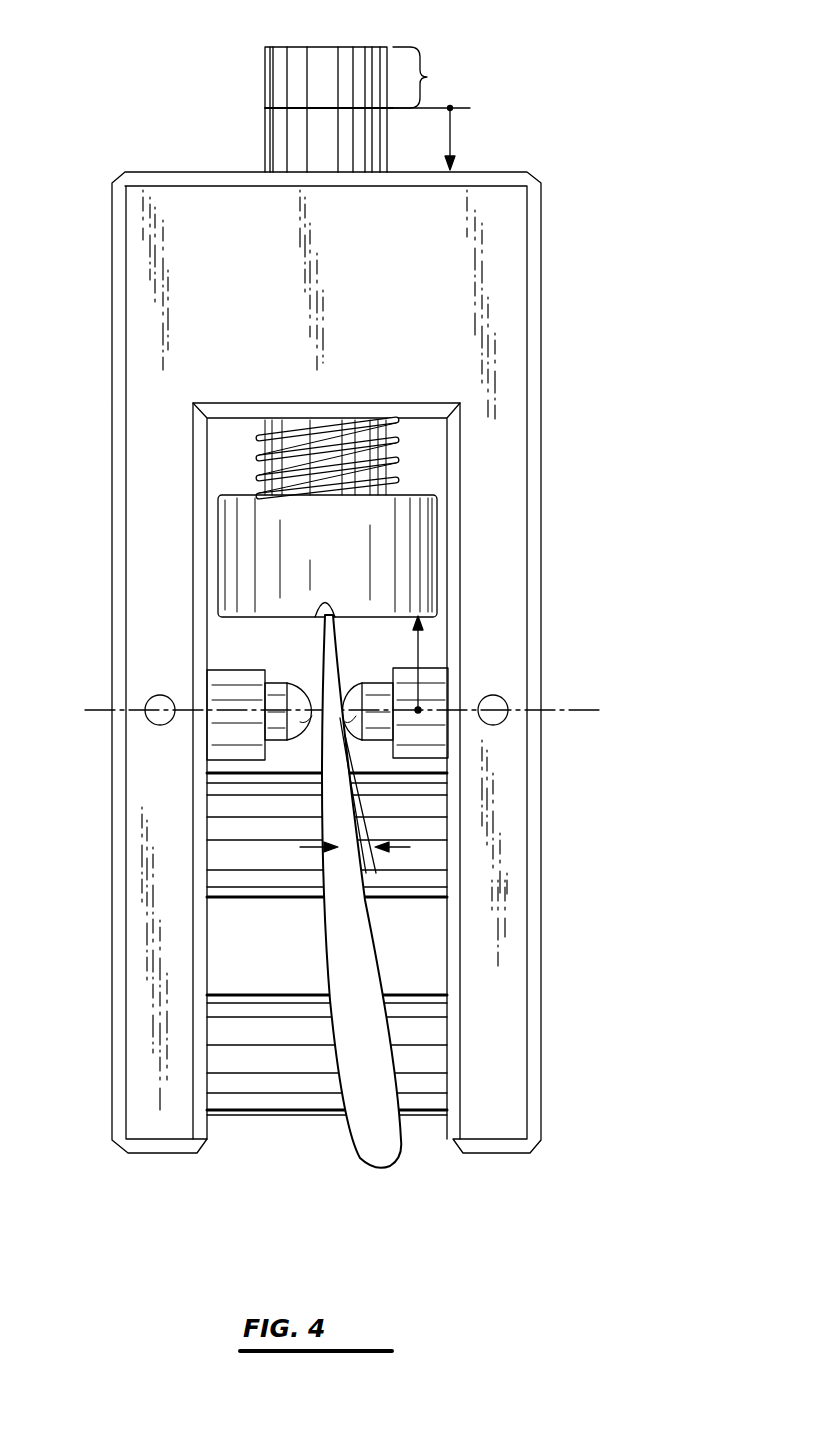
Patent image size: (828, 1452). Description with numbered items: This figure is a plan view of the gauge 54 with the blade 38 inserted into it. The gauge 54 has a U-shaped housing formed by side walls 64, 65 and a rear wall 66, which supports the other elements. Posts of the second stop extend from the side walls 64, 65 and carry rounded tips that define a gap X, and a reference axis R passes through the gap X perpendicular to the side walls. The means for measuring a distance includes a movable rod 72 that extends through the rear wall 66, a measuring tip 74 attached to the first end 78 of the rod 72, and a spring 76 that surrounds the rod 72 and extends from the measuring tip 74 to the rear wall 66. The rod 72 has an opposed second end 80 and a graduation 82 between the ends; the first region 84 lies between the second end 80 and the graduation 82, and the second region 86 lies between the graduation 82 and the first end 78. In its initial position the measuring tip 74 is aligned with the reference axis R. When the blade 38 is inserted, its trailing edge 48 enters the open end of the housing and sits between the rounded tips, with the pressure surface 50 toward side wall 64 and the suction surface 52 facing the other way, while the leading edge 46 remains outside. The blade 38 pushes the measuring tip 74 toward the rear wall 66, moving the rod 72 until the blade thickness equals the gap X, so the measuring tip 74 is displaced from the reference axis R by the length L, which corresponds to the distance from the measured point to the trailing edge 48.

The gauge 54 is at (618, 88).
The rear wall 66 is at (497, 306).
The side wall 65 is at (113, 836).
The side wall 64 is at (542, 858).
The second end 80 is at (291, 47).
The graduation 82 is at (300, 108).
The first region 84 is at (431, 77).
The second region 86 is at (455, 122).
The movable rod 72 is at (255, 460).
The spring 76 is at (260, 435).
The first end 78 is at (390, 490).
The measuring tip 74 is at (338, 554).
The trailing edge 48 is at (318, 606).
The length L is at (418, 640).
The reference axis R is at (560, 710).
The pressure surface 50 is at (355, 933).
The suction surface 52 is at (322, 945).
The gap X is at (365, 848).
The blade 38 is at (342, 1142).
The leading edge 46 is at (395, 1169).